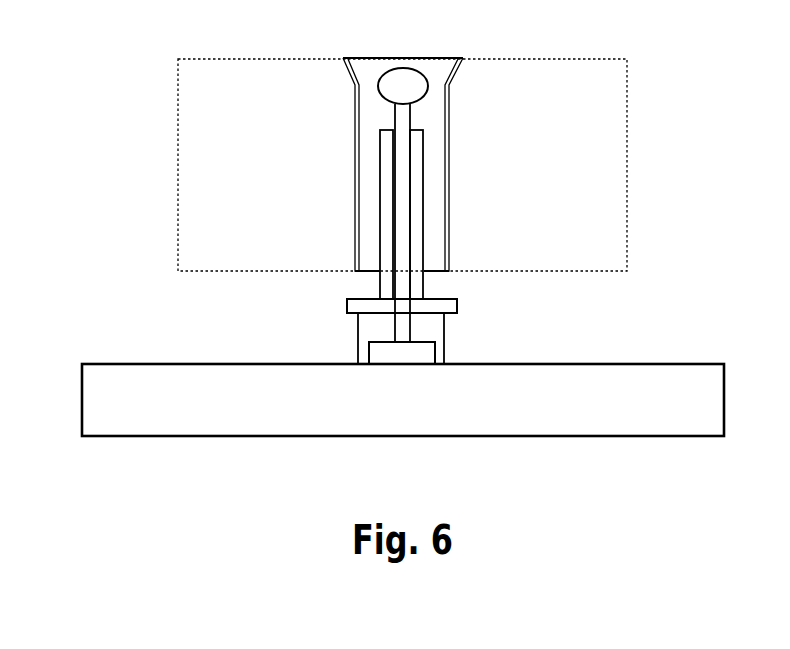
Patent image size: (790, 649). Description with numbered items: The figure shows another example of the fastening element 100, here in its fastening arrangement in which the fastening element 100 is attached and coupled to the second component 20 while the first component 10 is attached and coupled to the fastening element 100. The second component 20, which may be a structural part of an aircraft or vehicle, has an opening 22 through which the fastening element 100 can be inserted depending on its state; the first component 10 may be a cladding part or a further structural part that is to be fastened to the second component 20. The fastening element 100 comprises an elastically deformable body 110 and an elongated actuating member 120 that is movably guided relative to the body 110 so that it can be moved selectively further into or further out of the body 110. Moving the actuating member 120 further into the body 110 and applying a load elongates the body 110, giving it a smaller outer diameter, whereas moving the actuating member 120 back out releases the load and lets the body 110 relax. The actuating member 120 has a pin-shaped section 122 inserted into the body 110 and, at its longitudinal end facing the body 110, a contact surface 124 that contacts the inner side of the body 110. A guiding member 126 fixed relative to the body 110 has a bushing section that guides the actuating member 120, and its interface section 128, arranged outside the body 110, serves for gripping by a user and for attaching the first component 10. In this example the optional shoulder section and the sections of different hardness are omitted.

The first component 10 is at (92, 393).
The second component 20 is at (216, 70).
The opening 22 is at (346, 73).
The fastening element 100 is at (376, 255).
The body 110 is at (435, 90).
The actuating member 120 is at (372, 333).
The pin-shaped section 122 is at (356, 262).
The contact surface 124 is at (412, 82).
The guiding member 126 is at (422, 288).
The interface section 128 is at (456, 312).